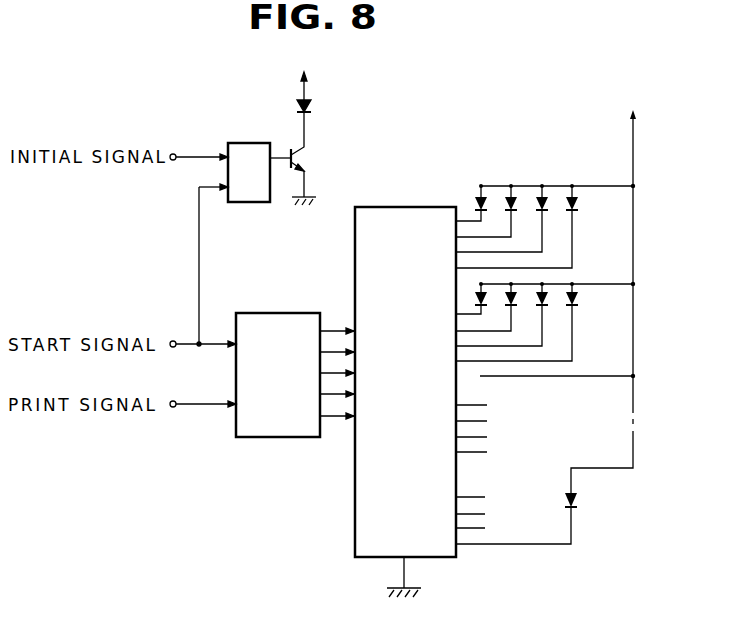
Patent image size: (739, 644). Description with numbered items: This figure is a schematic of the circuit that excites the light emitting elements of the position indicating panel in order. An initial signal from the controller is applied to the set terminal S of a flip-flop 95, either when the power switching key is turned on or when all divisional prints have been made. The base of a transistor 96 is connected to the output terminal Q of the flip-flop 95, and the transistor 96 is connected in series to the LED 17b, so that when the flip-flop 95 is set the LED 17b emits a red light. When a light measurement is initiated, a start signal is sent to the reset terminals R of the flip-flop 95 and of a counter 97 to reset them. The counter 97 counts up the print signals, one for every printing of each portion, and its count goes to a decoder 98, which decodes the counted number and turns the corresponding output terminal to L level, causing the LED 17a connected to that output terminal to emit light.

The flip-flop 95 is at (250, 148).
The transistor 96 is at (300, 161).
The counter 97 is at (278, 318).
The decoder 98 is at (355, 507).
The LED 17a is at (476, 202).
The LED 17b is at (312, 105).